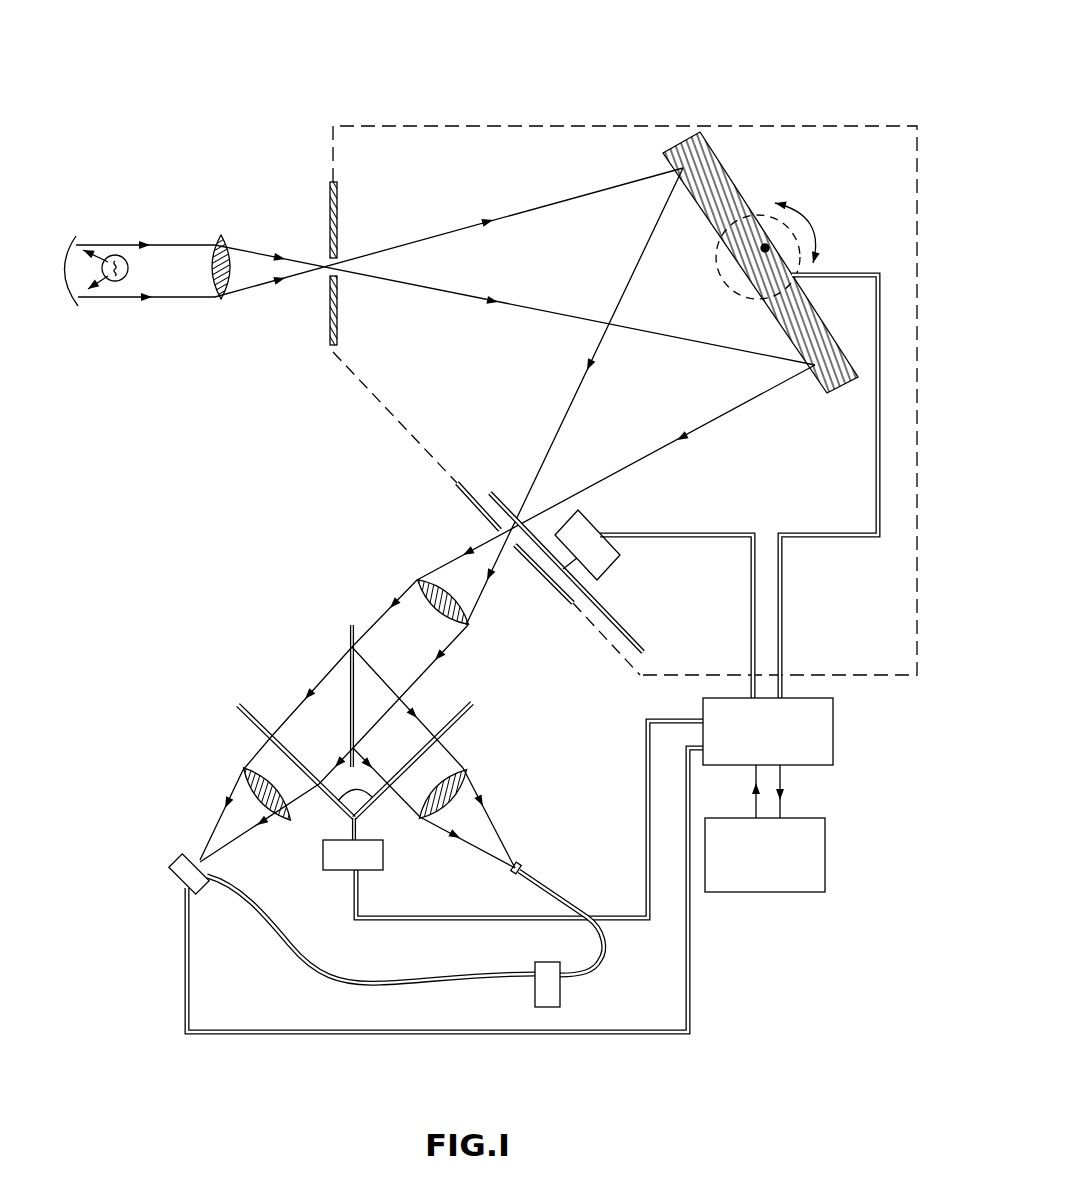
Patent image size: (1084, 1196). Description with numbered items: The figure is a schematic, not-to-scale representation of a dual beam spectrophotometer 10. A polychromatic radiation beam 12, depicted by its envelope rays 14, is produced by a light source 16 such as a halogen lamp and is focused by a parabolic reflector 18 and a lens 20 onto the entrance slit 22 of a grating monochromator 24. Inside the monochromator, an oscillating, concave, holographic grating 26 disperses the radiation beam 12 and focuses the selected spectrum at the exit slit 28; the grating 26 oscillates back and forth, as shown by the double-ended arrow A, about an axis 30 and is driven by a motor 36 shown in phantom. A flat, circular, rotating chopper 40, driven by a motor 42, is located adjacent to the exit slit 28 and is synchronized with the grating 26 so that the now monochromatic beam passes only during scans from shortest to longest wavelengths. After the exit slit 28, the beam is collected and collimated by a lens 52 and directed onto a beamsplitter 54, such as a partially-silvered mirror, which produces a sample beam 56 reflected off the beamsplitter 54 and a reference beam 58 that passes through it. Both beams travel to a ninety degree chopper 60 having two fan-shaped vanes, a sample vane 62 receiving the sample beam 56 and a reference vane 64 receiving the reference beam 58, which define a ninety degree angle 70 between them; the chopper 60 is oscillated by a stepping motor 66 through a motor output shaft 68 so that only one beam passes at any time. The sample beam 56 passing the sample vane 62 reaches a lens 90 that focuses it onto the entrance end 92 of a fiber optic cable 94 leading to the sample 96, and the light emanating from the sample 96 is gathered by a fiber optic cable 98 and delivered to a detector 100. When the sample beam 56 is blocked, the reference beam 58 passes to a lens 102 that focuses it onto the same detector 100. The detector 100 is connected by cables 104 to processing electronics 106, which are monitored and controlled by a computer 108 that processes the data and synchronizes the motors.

The dual beam spectrophotometer 10 is at (600, 342).
The polychromatic radiation beam 12 is at (145, 236).
The envelope rays 14 is at (539, 209).
The light source 16 is at (120, 282).
The parabolic reflector 18 is at (77, 306).
The lens 20 is at (218, 300).
The entrance slit 22 is at (340, 262).
The grating monochromator 24 is at (397, 427).
The oscillating concave holographic grating 26 is at (760, 262).
The exit slit 28 is at (503, 532).
The axis 30 is at (765, 252).
The motor 36 is at (715, 263).
The rotating chopper 40 is at (613, 621).
The motor 42 is at (597, 530).
The lens 52 is at (417, 581).
The beamsplitter 54 is at (350, 637).
The sample beam 56 is at (410, 710).
The reference beam 58 is at (333, 668).
The ninety degree chopper 60 is at (368, 786).
The sample vane 62 is at (472, 705).
The reference vane 64 is at (253, 718).
The stepping motor 66 is at (346, 879).
The motor output shaft 68 is at (352, 823).
The ninety degree angle 70 is at (355, 785).
The lens 90 is at (467, 771).
The entrance end 92 is at (517, 863).
The fiber optic cable 94 is at (575, 907).
The sample 96 is at (561, 1002).
The fiber optic cable 98 is at (367, 980).
The detector 100 is at (180, 856).
The lens 102 is at (243, 768).
The cables 104 is at (783, 563).
The processing electronics 106 is at (833, 752).
The computer 108 is at (826, 858).
The double-ended arrow A is at (801, 231).